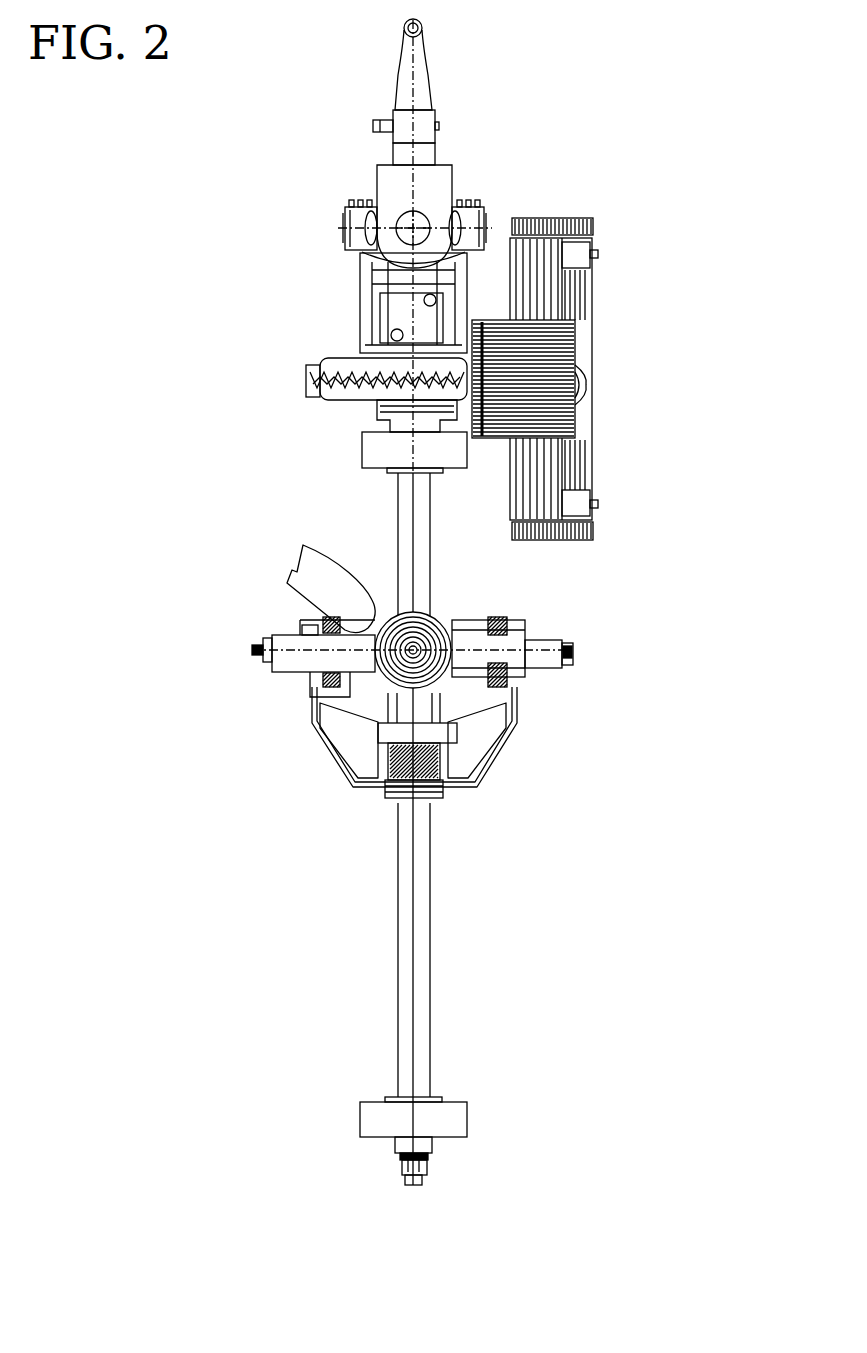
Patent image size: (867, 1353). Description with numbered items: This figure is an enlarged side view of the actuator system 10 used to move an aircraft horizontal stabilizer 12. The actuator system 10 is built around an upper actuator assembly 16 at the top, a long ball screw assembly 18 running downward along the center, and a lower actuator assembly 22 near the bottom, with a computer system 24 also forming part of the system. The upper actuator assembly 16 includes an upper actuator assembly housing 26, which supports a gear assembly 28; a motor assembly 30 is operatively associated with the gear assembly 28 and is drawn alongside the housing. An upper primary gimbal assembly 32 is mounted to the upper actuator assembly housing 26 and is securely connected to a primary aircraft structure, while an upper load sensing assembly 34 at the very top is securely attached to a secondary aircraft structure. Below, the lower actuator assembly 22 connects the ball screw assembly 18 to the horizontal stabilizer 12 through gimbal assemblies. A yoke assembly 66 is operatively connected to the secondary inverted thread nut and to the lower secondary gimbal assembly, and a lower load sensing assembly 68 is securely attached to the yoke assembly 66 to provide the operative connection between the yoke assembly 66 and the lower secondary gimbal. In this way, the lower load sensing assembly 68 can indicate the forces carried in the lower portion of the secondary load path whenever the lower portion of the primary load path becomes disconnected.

The steering apparatus 10 is at (608, 183).
The horizontal stabilizer 12 is at (290, 572).
The upper actuator assembly 16 is at (265, 343).
The ball screw assembly 18 is at (398, 508).
The lower actuator assembly 22 is at (323, 750).
The computer system 24 is at (580, 357).
The upper actuator assembly housing 26 is at (360, 290).
The gear assembly 28 is at (323, 403).
The motor assembly 30 is at (598, 283).
The upper primary gimbal assembly 32 is at (489, 203).
The upper load sensing assembly 34 is at (376, 112).
The yoke assembly 66 is at (500, 762).
The lower load sensing assembly 68 is at (263, 629).